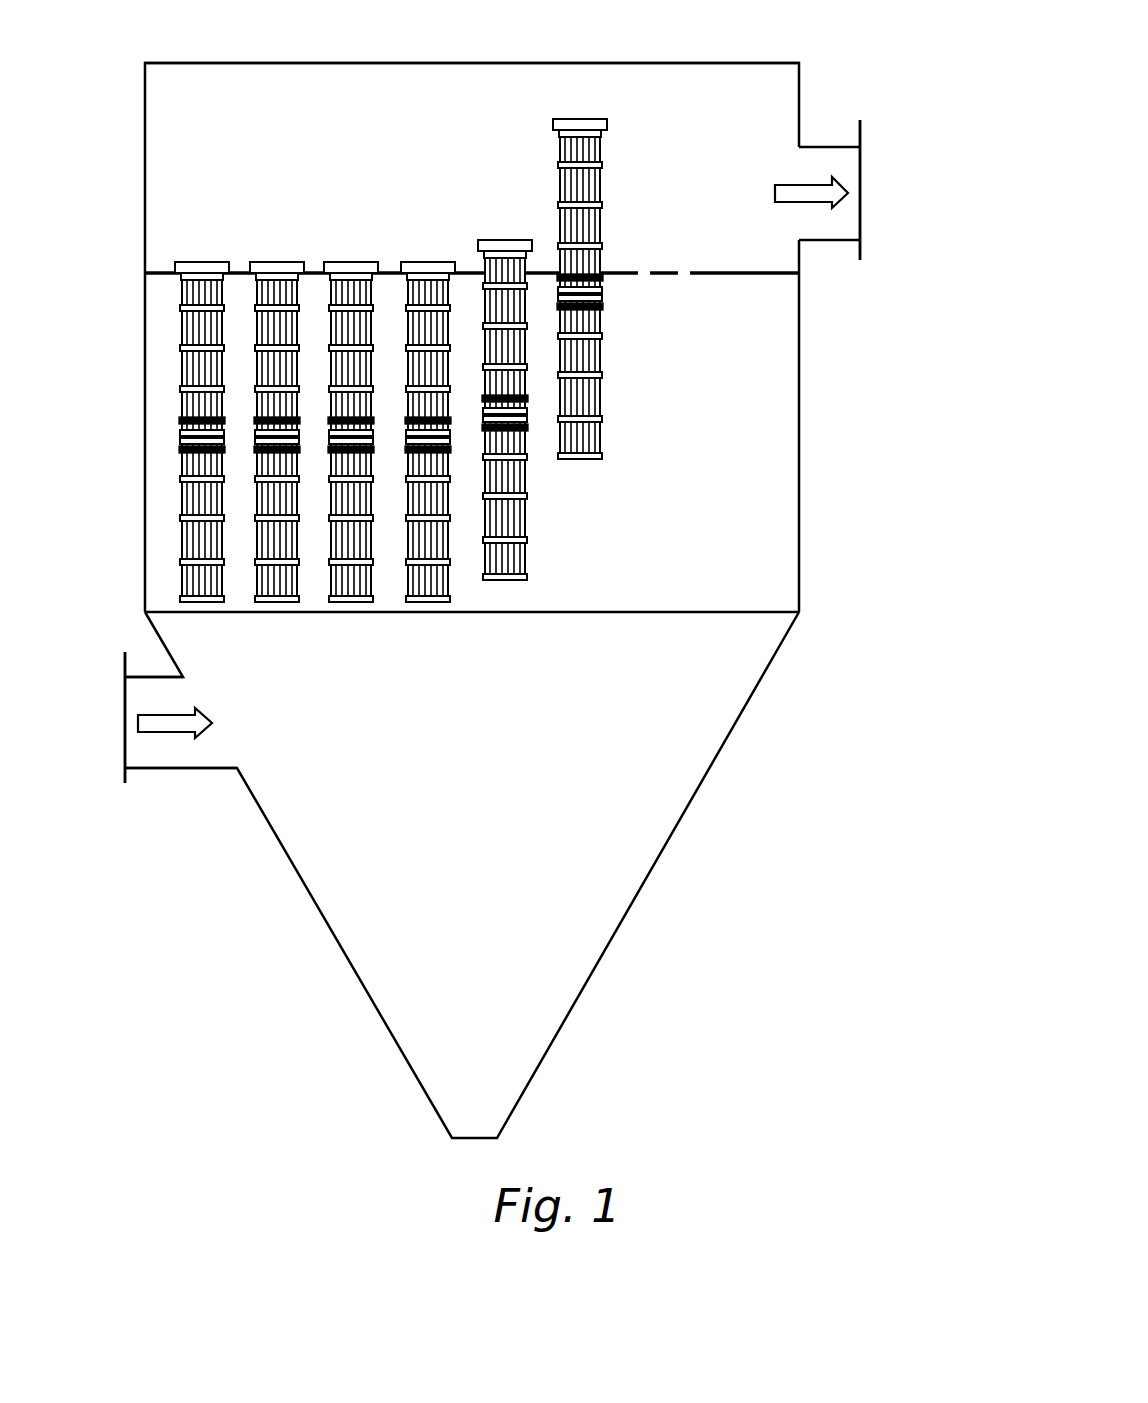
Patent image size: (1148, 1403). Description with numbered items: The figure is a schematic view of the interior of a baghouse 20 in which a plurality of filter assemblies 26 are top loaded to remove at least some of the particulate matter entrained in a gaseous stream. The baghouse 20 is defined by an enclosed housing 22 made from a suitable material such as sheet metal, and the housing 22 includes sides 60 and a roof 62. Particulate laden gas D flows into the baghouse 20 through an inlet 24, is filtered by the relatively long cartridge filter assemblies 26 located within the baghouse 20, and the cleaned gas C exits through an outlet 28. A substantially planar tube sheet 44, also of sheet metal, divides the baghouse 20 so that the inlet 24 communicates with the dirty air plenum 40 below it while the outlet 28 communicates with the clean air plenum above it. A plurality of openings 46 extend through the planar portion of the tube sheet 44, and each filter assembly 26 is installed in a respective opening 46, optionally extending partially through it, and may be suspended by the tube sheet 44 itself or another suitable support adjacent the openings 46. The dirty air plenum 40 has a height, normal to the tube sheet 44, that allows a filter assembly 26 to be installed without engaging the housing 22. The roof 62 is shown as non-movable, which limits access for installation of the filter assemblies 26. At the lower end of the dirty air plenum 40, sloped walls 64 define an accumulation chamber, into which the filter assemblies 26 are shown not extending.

The baghouse 20 is at (505, 575).
The housing 22 is at (864, 156).
The inlet 24 is at (123, 748).
The filter assembly 26 is at (201, 260).
The outlet 28 is at (860, 222).
The dirty air plenum 40 is at (272, 122).
The tube sheet 44 is at (472, 264).
The opening 46 is at (652, 278).
The sides 60 is at (145, 490).
The roof 62 is at (480, 63).
The sloped walls 64 is at (355, 963).
The cleaned gas C is at (795, 185).
The particulate laden gas D is at (182, 708).